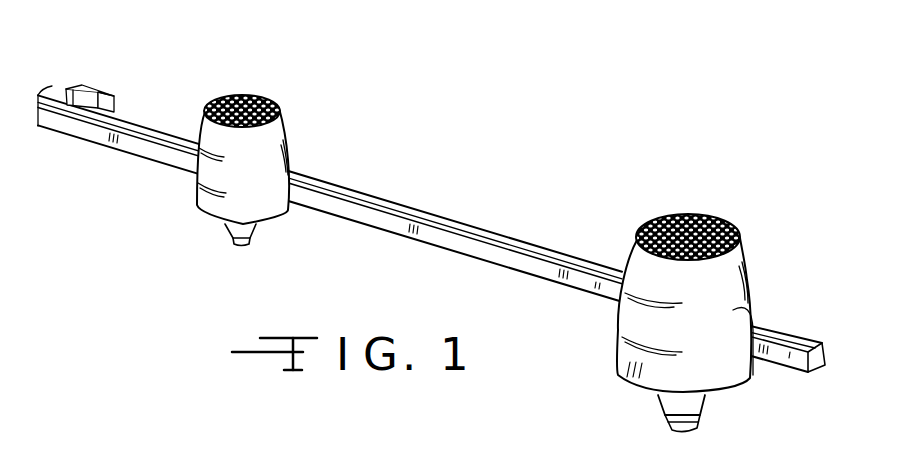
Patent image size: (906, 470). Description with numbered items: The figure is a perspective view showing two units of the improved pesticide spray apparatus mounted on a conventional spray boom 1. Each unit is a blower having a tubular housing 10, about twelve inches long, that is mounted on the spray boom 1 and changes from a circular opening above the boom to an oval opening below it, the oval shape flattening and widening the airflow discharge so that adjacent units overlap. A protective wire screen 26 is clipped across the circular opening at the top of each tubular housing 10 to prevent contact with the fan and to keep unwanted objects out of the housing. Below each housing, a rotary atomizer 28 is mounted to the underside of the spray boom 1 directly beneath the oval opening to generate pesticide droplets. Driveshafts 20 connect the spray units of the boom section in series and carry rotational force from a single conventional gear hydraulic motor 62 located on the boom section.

The spray boom 1 is at (432, 229).
The tubular housing 10 is at (283, 127).
The driveshafts 20 is at (473, 230).
The protective wire screen 26 is at (262, 99).
The rotary atomizer 28 is at (257, 232).
The hydraulic motor 62 is at (84, 88).